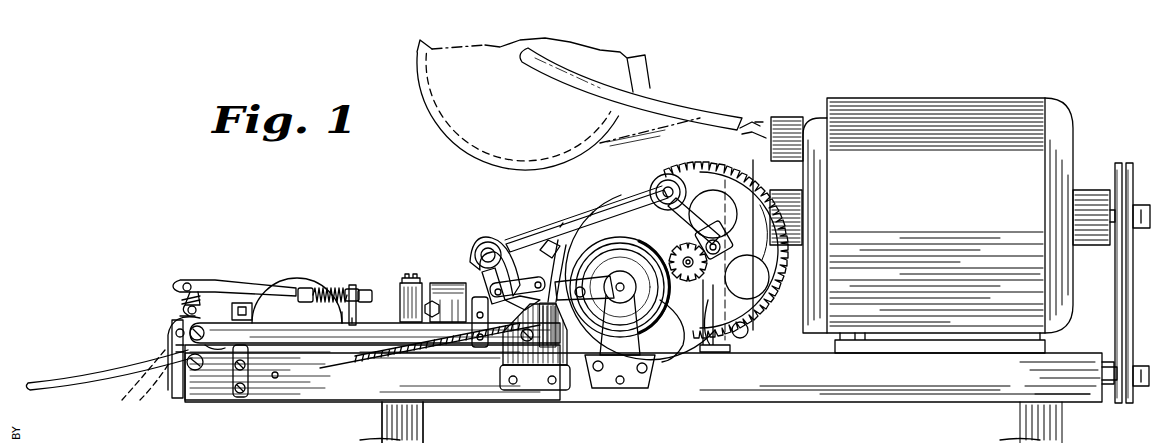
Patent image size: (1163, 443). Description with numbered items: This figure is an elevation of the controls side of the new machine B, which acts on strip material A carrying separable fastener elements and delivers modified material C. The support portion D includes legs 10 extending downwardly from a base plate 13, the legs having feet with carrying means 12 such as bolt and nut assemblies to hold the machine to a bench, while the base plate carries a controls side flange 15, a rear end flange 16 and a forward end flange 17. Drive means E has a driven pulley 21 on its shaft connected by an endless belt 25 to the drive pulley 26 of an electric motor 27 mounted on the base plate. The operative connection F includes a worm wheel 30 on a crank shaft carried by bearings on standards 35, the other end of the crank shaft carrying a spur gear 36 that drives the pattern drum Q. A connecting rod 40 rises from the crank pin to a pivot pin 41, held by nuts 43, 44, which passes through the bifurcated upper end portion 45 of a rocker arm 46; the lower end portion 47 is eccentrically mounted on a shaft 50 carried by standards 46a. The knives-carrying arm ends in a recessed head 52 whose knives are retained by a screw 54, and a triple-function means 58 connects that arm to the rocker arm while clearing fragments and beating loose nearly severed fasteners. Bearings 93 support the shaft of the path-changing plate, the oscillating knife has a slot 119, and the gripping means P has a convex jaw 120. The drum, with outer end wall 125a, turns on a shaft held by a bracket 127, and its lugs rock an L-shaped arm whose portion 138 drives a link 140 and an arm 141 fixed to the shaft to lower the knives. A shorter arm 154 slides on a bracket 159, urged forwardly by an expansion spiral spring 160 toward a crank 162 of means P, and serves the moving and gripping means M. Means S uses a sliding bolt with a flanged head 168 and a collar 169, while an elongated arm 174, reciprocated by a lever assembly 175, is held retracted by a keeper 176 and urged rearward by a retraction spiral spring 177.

The legs 10 is at (425, 432).
The carrying means 12 is at (378, 440).
The base plate 13 is at (1050, 350).
The controls side flange 15 is at (858, 392).
The rear end flange 16 is at (1100, 400).
The forward end flange 17 is at (180, 392).
The driven pulley 21 is at (1110, 360).
The endless belt 25 is at (1125, 165).
The drive pulley 26 is at (1117, 182).
The electric motor 27 is at (1022, 128).
The worm wheel 30 is at (768, 318).
The standards 35 is at (703, 293).
The spur gear 36 is at (715, 330).
The connecting rod 40 is at (700, 213).
The pivot pin 41 is at (729, 173).
The nut 43 is at (588, 242).
The nut 44 is at (602, 202).
The bifurcated upper end portion 45 is at (625, 205).
The rocker arm 46 is at (547, 243).
The standards 46a is at (472, 290).
The lower end portion 47 is at (508, 245).
The shaft 50 is at (472, 250).
The recessed head 52 is at (415, 295).
The screw 54 is at (408, 350).
The triple-function means 58 is at (620, 287).
The bearings 93 is at (310, 325).
The slot 119 is at (176, 338).
The jaw 120 is at (172, 322).
The outer end wall 125a is at (678, 350).
The bracket 127 is at (645, 385).
The arm portion 138 is at (580, 395).
The link 140 is at (517, 293).
The arm 141 is at (484, 278).
The shorter arm 154 is at (278, 288).
The bracket 159 is at (357, 315).
The expansion spiral spring 160 is at (325, 290).
The crank 162 is at (176, 300).
The flanged head 168 is at (608, 273).
The collar 169 is at (602, 252).
The elongated arm 174 is at (338, 365).
The crank or lever assembly 175 is at (96, 380).
The keeper 176 is at (446, 352).
The retraction spiral spring 177 is at (480, 356).
The material A is at (593, 196).
The new machine B is at (411, 213).
The modified material C is at (146, 386).
The support portion D is at (441, 418).
The drive means E is at (1093, 130).
The operative connection F is at (773, 192).
The modified material moving and gripping means M is at (238, 300).
The auxiliary modified material gripping means P is at (158, 317).
The pattern drum Q is at (557, 265).
The means to control the operation of the pattern drum S is at (422, 373).